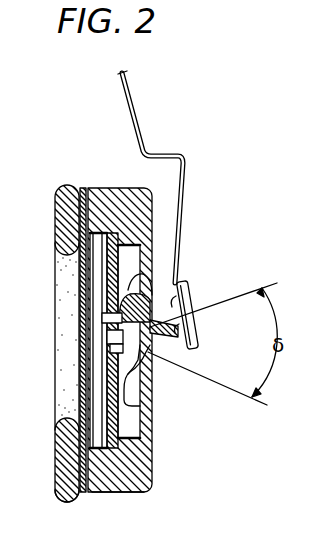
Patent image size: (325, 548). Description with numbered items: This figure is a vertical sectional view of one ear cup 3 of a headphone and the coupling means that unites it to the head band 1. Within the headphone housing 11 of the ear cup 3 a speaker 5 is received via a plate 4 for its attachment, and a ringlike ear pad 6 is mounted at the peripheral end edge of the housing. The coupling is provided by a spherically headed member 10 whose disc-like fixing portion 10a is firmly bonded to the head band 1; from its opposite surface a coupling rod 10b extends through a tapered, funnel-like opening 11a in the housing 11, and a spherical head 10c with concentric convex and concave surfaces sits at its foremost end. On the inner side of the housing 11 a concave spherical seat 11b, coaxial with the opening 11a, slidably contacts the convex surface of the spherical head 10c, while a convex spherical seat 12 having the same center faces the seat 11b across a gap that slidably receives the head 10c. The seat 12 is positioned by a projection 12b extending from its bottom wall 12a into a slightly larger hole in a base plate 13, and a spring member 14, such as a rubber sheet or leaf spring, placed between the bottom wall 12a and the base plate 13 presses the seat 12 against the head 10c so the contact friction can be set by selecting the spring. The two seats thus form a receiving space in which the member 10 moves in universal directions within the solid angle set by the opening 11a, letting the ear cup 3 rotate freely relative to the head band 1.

The head band 1 is at (138, 117).
The ear cup 3 is at (105, 493).
The plate 4 is at (60, 278).
The speaker 5 is at (93, 242).
The ear pad 6 is at (58, 496).
The spherically headed member 10 is at (153, 356).
The fixing portion 10a is at (178, 288).
The coupling rod 10b is at (195, 327).
The spherical head 10c is at (151, 416).
The headphone housing 11 is at (148, 482).
The opening 11a is at (172, 337).
The concave spherical seat 11b is at (155, 275).
The convex spherical seat 12 is at (113, 376).
The bottom wall 12a is at (110, 357).
The projection 12b is at (110, 340).
The base plate 13 is at (62, 416).
The spring member 14 is at (104, 318).